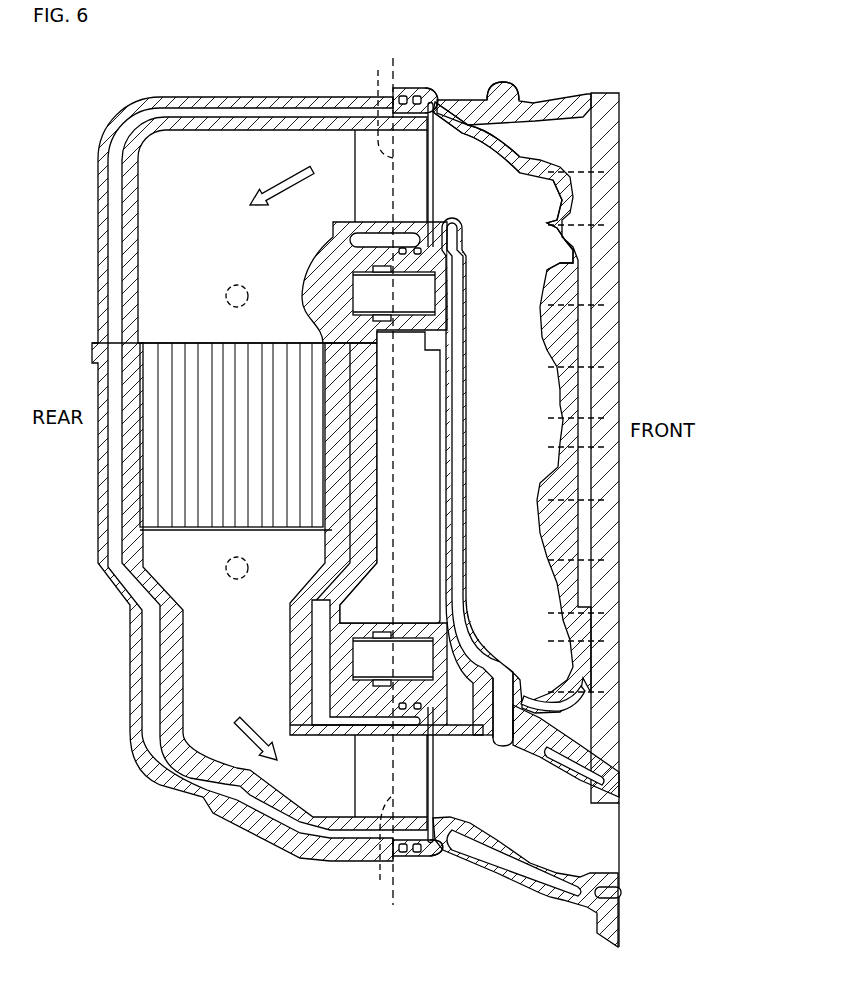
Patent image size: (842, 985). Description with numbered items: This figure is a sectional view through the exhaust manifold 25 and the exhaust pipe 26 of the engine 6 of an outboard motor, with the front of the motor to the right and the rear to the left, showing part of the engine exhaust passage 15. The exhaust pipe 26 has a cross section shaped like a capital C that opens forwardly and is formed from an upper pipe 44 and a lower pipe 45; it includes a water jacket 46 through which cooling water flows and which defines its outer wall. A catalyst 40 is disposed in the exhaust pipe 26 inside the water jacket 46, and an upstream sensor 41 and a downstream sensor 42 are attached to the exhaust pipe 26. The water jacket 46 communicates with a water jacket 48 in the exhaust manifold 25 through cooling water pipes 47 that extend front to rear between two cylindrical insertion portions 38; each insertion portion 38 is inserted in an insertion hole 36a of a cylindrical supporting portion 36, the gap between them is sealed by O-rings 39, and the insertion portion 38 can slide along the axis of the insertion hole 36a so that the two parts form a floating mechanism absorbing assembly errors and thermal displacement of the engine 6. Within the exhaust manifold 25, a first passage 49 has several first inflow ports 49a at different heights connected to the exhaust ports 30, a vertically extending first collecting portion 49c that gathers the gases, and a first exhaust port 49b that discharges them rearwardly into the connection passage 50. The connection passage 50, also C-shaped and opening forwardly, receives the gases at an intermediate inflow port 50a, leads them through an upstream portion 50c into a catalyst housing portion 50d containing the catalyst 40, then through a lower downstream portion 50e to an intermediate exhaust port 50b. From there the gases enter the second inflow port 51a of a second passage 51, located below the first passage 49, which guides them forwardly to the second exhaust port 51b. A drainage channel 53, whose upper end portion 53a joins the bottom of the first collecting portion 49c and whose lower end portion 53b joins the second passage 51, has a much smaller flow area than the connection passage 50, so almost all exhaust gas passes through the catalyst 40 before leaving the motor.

The engine 6 is at (645, 84).
The engine exhaust passage 15 is at (166, 172).
The exhaust manifold 25 is at (505, 84).
The exhaust pipe 26 is at (275, 96).
The exhaust ports 30 is at (611, 187).
The supporting portion 36 is at (418, 88).
The insertion hole 36a is at (438, 100).
The insertion portion 38 is at (430, 112).
The O-rings 39 is at (404, 96).
The catalyst 40 is at (172, 450).
The upstream sensor 41 is at (226, 296).
The downstream sensor 42 is at (226, 569).
The upper pipe 44 is at (98, 245).
The lower pipe 45 is at (97, 378).
The water jacket 46 is at (357, 410).
The cooling water pipes 47 is at (420, 330).
The water jacket 48 is at (450, 428).
The first passage 49 is at (517, 330).
The first inflow ports 49a is at (556, 192).
The first exhaust port 49b is at (376, 104).
The first collecting portion 49c is at (517, 547).
The connection passage 50 is at (247, 233).
The intermediate inflow port 50a is at (440, 190).
The intermediate exhaust port 50b is at (432, 783).
The upstream portion 50c is at (258, 280).
The catalyst housing portion 50d is at (257, 511).
The downstream portion 50e is at (257, 667).
The second passage 51 is at (577, 850).
The second inflow port 51a is at (376, 849).
The second exhaust port 51b is at (619, 838).
The drainage channel 53 is at (517, 713).
The upper end portion 53a is at (503, 688).
The lower end portion 53b is at (500, 748).